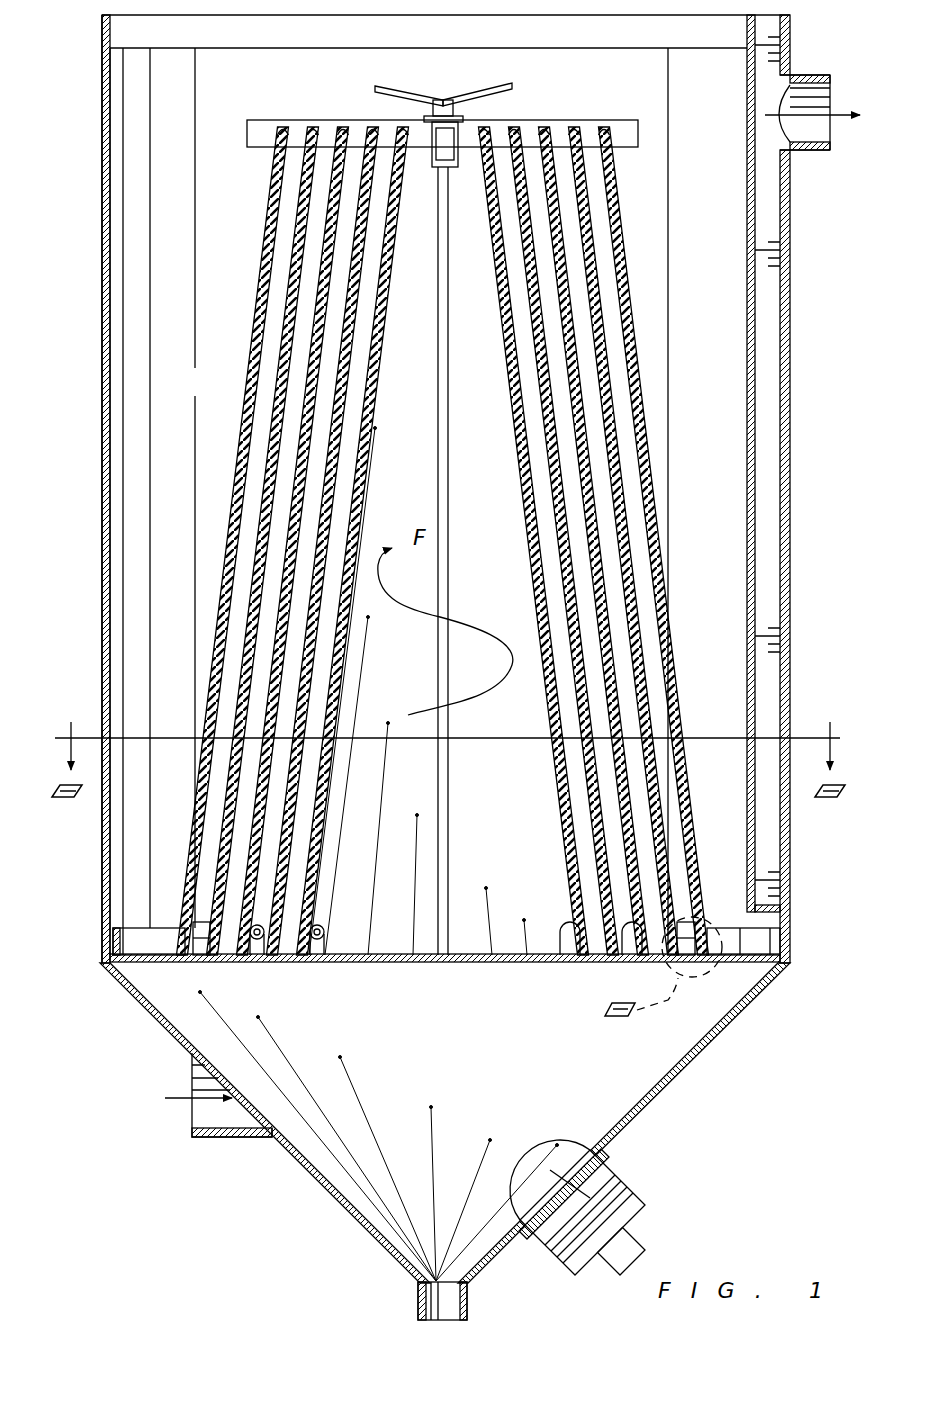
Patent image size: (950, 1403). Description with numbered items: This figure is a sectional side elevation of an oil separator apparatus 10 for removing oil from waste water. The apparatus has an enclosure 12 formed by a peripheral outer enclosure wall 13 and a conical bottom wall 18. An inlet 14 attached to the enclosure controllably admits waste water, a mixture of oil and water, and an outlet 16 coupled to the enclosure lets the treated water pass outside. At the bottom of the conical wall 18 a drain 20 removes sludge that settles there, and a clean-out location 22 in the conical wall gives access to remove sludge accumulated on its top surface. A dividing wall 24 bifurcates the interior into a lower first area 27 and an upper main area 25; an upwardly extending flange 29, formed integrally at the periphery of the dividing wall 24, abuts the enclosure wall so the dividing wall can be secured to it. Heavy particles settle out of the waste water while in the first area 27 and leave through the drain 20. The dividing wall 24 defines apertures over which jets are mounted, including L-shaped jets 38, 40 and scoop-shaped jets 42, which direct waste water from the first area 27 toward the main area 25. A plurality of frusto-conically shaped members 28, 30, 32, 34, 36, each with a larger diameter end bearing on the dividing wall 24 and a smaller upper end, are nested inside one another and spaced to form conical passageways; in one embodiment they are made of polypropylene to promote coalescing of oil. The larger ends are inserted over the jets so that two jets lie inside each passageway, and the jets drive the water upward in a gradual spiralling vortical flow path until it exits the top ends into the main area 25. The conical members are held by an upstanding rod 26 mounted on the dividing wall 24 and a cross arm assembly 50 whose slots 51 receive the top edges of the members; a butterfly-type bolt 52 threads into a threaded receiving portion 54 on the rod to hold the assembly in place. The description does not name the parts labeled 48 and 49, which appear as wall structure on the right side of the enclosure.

The oil separator apparatus 10 is at (72, 100).
The enclosure 12 is at (98, 377).
The outer enclosure wall 13 is at (103, 265).
The inlet 14 is at (210, 1138).
The outlet 16 is at (820, 152).
The conical bottom wall 18 is at (700, 1052).
The drain 20 is at (470, 1312).
The clean-out location 22 is at (660, 1218).
The dividing wall 24 is at (495, 962).
The main area 25 is at (205, 395).
The upstanding rod 26 is at (448, 850).
The first area 27 is at (471, 1104).
The frusto-conically shaped member 28 is at (281, 185).
The upwardly extending flange 29 is at (753, 941).
The frusto-conically shaped member 30 is at (300, 262).
The frusto-conically shaped member 32 is at (320, 338).
The frusto-conically shaped member 34 is at (340, 372).
The frusto-conically shaped member 36 is at (476, 529).
The jet 38 is at (333, 945).
The jet 40 is at (257, 945).
The jet 42 is at (205, 908).
The baffle wall 48 is at (747, 85).
The outer wall 49 is at (787, 540).
The cross arm assembly 50 is at (352, 140).
The slots 51 is at (283, 133).
The butterfly-type bolt 52 is at (480, 96).
The threaded receiving portion 54 is at (445, 150).